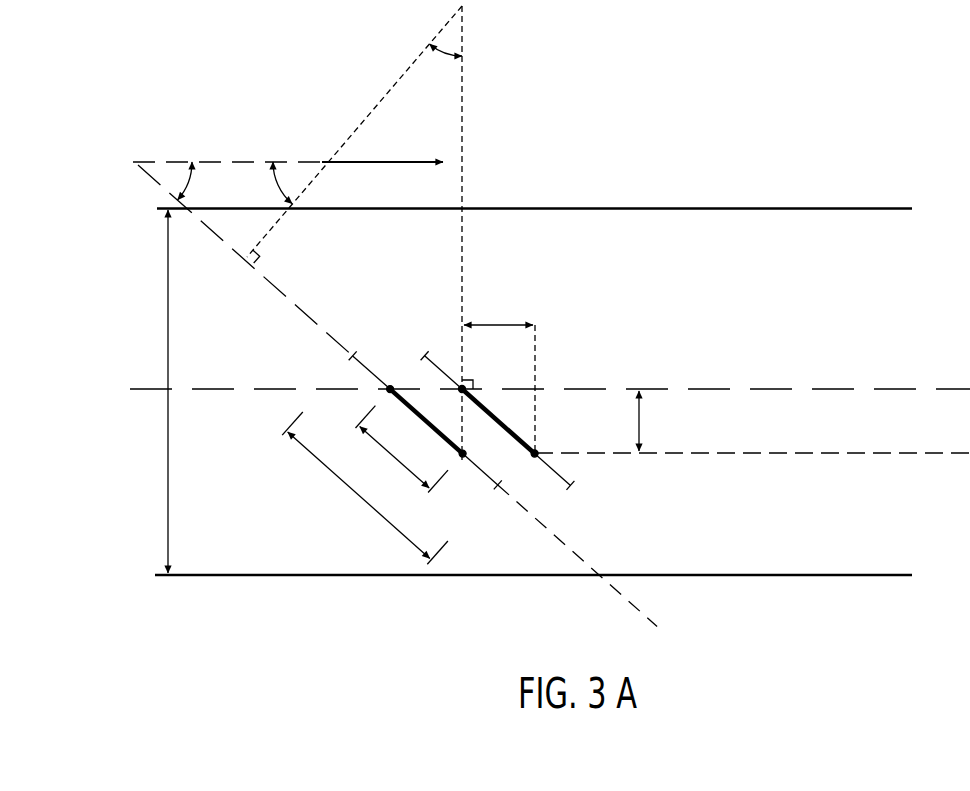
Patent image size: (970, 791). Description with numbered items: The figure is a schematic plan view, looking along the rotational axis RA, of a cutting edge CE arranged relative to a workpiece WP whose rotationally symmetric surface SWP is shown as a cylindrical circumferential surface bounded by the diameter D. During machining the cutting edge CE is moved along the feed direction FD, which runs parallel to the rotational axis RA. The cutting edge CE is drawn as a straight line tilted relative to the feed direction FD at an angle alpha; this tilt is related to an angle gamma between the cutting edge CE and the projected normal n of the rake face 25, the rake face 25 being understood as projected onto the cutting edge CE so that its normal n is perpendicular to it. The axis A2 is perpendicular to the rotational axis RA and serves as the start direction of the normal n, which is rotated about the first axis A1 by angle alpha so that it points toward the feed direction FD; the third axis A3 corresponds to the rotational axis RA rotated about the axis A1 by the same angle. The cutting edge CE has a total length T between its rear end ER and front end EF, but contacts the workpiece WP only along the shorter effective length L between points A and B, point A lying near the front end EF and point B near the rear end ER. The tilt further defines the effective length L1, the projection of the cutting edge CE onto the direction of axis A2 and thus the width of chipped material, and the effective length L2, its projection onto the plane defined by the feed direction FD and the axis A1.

The rake face 25 is at (413, 409).
The first axis A1 is at (460, 384).
The axis A2 is at (463, 96).
The third axis A3 is at (557, 537).
The point A is at (467, 453).
The point B is at (390, 386).
The cutting edge CE is at (427, 424).
The front end of the cutting edge EF is at (503, 488).
The rear end of the cutting edge ER is at (354, 353).
The effective length L is at (393, 458).
The effective length L1 is at (641, 420).
The effective length L2 is at (495, 324).
The total length T is at (364, 501).
The diameter of the workpiece D is at (166, 310).
The projected normal n is at (311, 182).
The feed direction FD is at (385, 161).
The rotationally symmetric surface SWP is at (724, 207).
The workpiece WP is at (917, 194).
The rotational axis RA is at (934, 388).